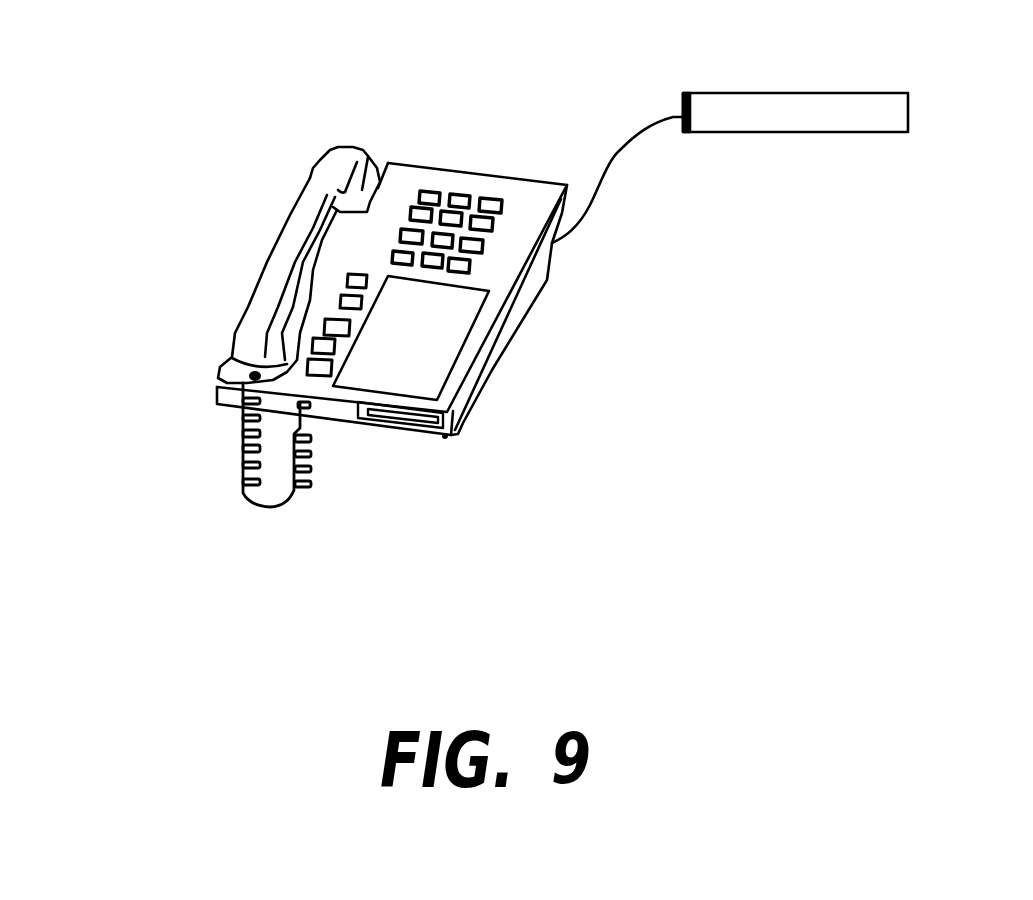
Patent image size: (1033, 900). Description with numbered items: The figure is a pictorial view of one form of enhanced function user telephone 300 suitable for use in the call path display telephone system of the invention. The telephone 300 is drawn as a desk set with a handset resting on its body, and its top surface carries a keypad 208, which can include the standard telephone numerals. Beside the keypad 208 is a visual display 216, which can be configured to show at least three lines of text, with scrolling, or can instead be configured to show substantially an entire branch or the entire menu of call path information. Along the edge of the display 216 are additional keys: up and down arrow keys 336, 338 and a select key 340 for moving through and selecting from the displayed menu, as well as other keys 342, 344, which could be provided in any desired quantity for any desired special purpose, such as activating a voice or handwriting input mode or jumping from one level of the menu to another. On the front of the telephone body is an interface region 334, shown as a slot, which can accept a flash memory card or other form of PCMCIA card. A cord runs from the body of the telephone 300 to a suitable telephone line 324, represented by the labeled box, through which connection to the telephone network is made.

The enhanced function user telephone 300 is at (419, 157).
The keypad 208 is at (494, 184).
The visual display 216 is at (450, 350).
The telephone line 324 is at (775, 92).
The interface region 334 is at (404, 426).
The up arrow key 336 is at (347, 280).
The down arrow key 338 is at (340, 298).
The select key 340 is at (323, 328).
The special purpose key 342 is at (312, 352).
The special purpose key 344 is at (307, 370).